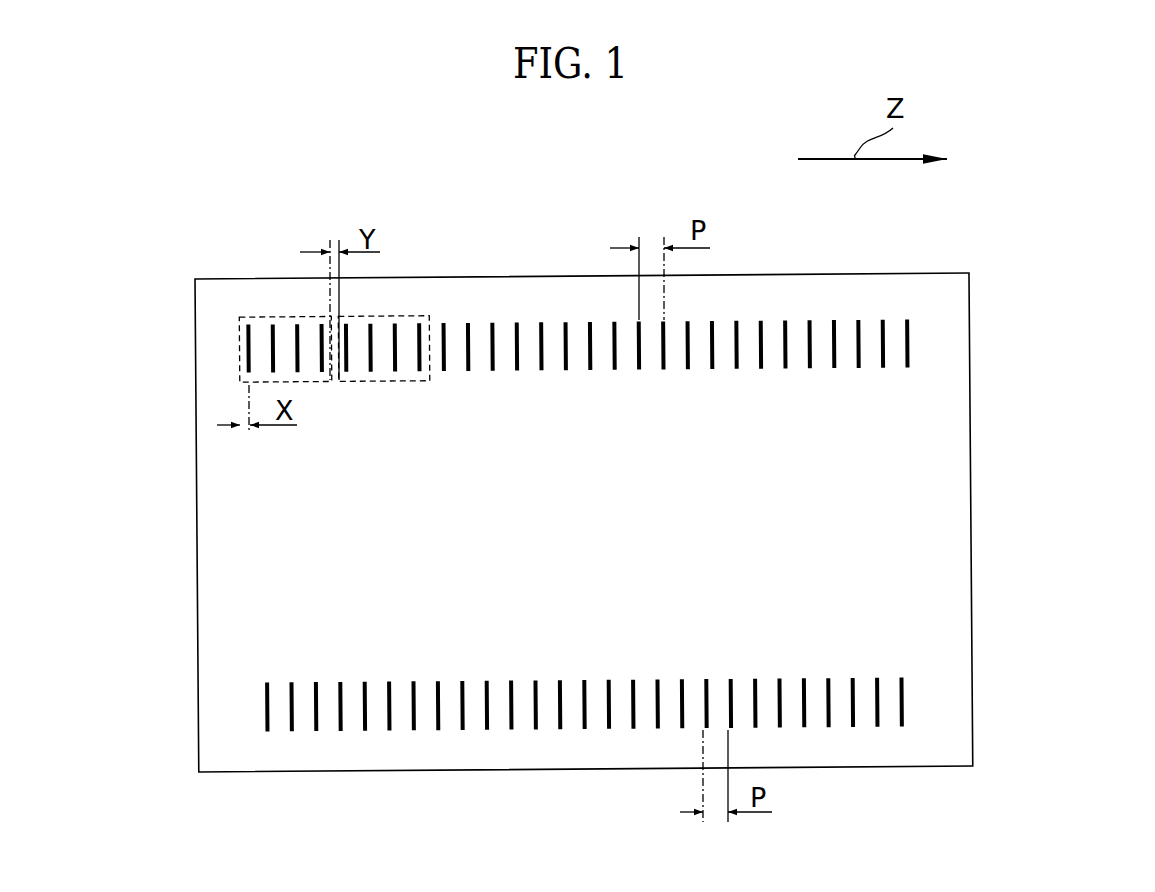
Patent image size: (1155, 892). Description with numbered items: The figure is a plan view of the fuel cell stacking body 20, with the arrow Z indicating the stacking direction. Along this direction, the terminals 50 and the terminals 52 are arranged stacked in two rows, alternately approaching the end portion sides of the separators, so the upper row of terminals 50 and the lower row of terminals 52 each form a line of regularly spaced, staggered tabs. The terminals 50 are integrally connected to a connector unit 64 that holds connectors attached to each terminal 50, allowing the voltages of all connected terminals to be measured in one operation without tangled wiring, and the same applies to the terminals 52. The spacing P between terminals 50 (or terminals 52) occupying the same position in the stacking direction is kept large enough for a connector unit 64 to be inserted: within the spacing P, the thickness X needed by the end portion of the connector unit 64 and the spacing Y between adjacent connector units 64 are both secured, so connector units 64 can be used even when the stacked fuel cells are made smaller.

The fuel cell stacking body 20 is at (1033, 397).
The terminals 50 is at (372, 340).
The terminals 52 is at (387, 718).
The connector unit 64 is at (278, 307).